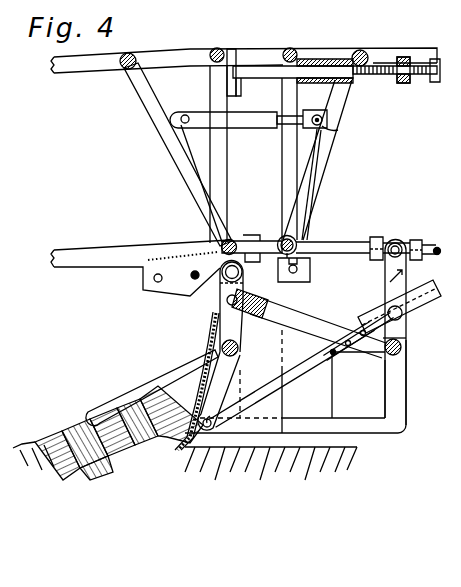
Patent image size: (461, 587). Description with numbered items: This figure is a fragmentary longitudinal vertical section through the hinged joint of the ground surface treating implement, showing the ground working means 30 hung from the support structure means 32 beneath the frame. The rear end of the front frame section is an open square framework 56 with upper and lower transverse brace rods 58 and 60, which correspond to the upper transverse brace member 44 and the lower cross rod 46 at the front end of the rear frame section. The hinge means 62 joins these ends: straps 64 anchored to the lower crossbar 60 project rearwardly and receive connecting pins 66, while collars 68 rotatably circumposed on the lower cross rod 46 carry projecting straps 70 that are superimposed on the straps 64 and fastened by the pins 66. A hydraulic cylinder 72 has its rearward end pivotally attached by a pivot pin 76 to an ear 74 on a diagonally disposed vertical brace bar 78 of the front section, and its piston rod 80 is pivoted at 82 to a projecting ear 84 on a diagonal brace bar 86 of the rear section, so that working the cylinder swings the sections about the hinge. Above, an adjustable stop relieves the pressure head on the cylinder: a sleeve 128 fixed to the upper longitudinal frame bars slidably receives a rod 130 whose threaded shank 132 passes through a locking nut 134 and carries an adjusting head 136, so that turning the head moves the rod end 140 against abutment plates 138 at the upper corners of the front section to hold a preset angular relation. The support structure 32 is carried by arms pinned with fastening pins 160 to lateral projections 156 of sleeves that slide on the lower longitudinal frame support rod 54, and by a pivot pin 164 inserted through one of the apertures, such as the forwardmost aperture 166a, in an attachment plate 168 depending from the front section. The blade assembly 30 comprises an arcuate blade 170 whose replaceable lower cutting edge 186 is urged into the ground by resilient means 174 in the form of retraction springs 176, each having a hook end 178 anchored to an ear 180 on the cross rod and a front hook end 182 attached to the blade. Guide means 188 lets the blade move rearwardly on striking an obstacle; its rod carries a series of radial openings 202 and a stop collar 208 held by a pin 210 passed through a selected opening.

The ground working means 30 is at (207, 326).
The support structure means 32 is at (408, 271).
The upper transverse brace member 44 is at (293, 48).
The lower cross rod 46 is at (346, 238).
The lower longitudinal frame support rod 54 is at (231, 162).
The square framework 56 is at (236, 58).
The upper transverse brace rod 58 is at (216, 49).
The lower transverse brace rod 60 is at (224, 243).
The hinge means 62 is at (309, 211).
The straps 64 is at (243, 272).
The connecting pins 66 is at (262, 234).
The collars 68 is at (298, 242).
The projecting straps 70 is at (311, 262).
The hydraulic cylinder 72 is at (192, 135).
The ear 74 is at (176, 113).
The pivot pin 76 is at (202, 118).
The diagonal brace bar 78 is at (147, 93).
The piston rod 80 is at (297, 114).
The pivot 82 is at (329, 148).
The projecting ear 84 is at (325, 116).
The diagonal brace bar 86 is at (314, 188).
The sleeve 128 is at (324, 62).
The rod 130 is at (361, 50).
The shank portion 132 is at (379, 78).
The locking nut 134 is at (404, 86).
The adjusting head 136 is at (433, 86).
The abutment plates 138 is at (240, 80).
The rod end 140 is at (250, 68).
The lateral projections 156 is at (415, 244).
The fastening pins 160 is at (394, 243).
The pivot pin 164 is at (218, 292).
The forwardmost aperture 166a is at (147, 283).
The attachment plates 168 is at (146, 250).
The arcuate blade 170 is at (181, 372).
The resilient means 174 is at (311, 327).
The retraction springs 176 is at (256, 380).
The hook ends 178 is at (368, 352).
The ears 180 is at (402, 363).
The front hook ends 182 is at (258, 315).
The lower cutting edge 186 is at (187, 446).
The guide means 188 is at (431, 317).
The radial openings 202 is at (291, 381).
The stop collar 208 is at (386, 291).
The pin 210 is at (386, 300).